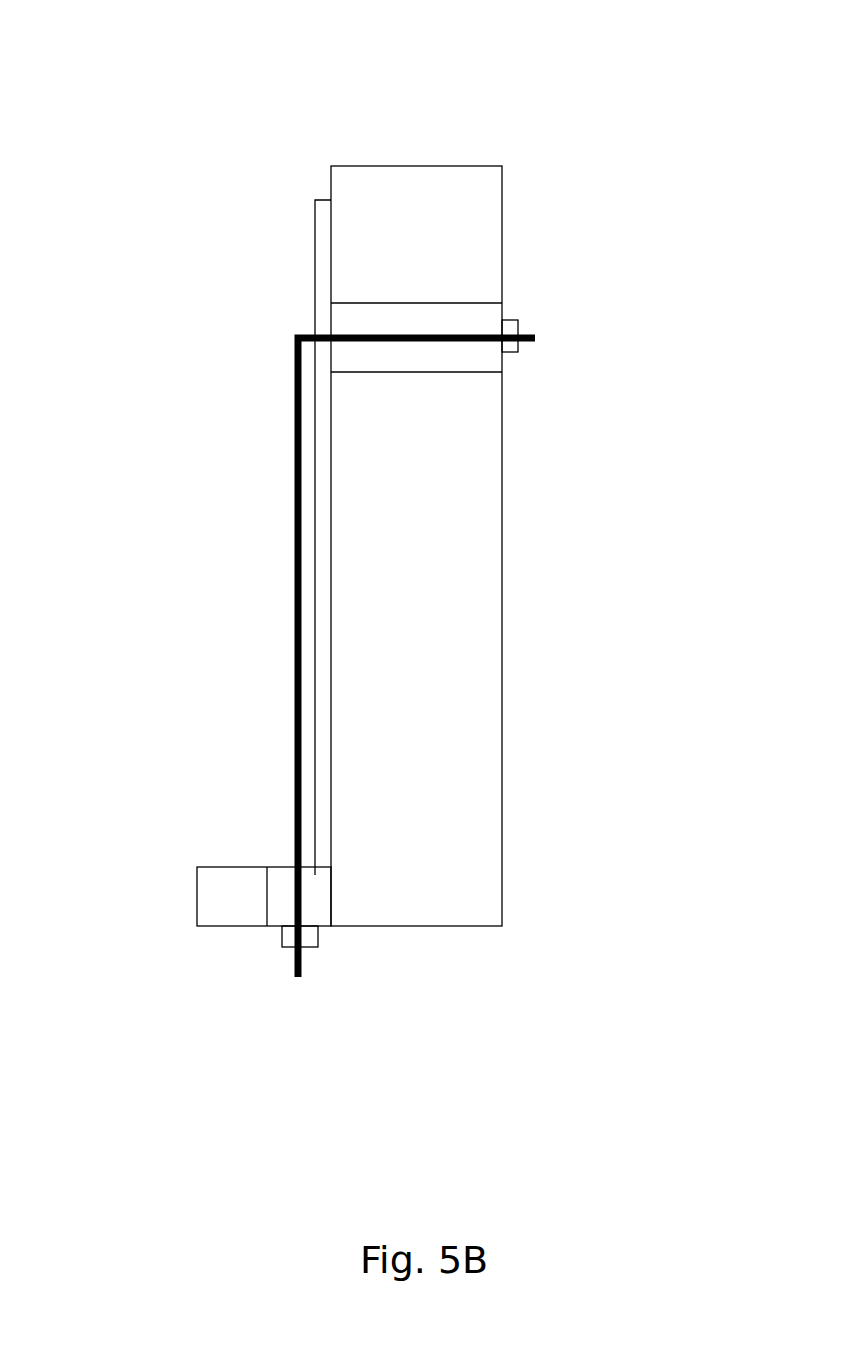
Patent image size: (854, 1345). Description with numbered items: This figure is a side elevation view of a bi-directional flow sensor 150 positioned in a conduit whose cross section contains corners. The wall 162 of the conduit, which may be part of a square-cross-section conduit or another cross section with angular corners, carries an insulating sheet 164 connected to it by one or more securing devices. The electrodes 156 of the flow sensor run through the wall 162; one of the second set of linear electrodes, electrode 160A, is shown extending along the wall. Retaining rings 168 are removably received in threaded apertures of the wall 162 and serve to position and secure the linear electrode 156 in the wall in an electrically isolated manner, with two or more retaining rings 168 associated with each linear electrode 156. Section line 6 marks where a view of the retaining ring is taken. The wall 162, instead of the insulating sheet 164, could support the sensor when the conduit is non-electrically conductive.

The bi-directional flow sensor 150 is at (418, 88).
The wall 162 is at (397, 166).
The insulating sheet 164 is at (312, 272).
The electrode of the second set 160A is at (296, 693).
The retaining ring 168 is at (488, 362).
The electrode 156 is at (408, 340).
The section line 6- 6 is at (242, 337).